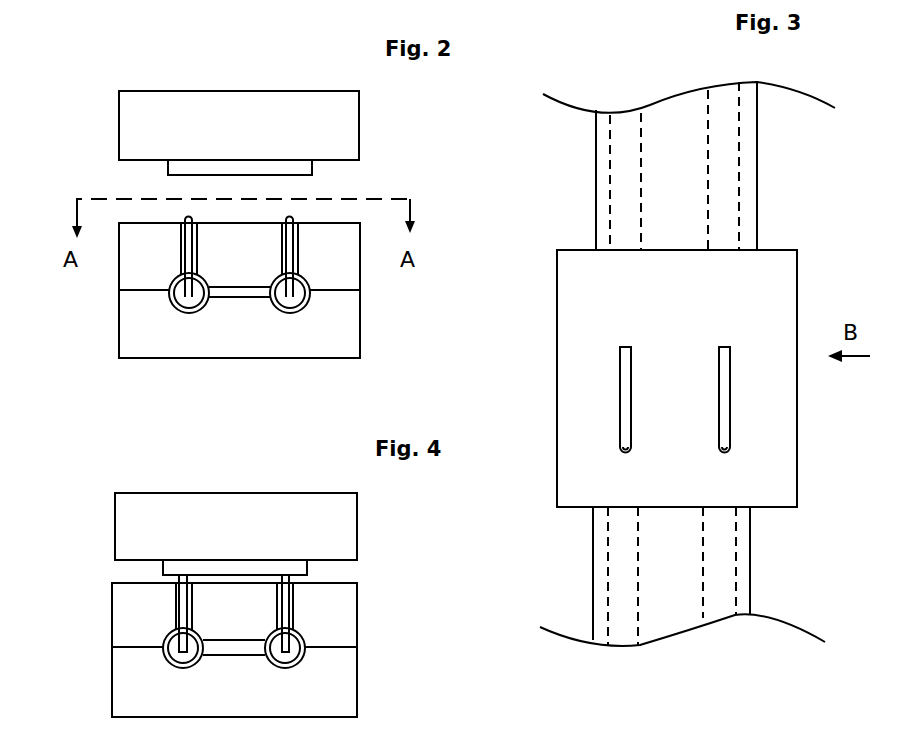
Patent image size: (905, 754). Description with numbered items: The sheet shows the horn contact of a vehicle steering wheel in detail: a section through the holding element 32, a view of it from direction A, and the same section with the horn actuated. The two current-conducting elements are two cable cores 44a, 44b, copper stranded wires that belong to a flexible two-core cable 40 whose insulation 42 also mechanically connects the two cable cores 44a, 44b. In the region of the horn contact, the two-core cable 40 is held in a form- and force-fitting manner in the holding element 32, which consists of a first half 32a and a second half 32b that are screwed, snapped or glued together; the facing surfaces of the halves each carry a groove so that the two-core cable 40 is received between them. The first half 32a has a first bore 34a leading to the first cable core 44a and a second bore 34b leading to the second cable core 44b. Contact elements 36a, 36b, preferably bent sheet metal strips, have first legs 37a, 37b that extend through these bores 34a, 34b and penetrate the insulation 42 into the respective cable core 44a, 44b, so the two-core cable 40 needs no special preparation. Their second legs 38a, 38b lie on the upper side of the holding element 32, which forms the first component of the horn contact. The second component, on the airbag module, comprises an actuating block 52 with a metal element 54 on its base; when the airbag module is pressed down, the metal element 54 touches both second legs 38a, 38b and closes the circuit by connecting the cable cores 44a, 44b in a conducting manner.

In FIG. 2, the holding element 32 is at (118, 273).
In FIG. 3, the holding element 32 is at (778, 458).
In FIG. 2, the first half 32a is at (343, 262).
In FIG. 2, the second half 32b is at (347, 316).
In FIG. 2, the first bore 34a is at (183, 245).
In FIG. 2, the second bore 34b is at (294, 250).
In FIG. 4, the contact element 36a is at (183, 608).
In FIG. 4, the contact element 36b is at (283, 605).
In FIG. 2, the first leg 37a is at (189, 265).
In FIG. 4, the first leg 37a is at (180, 600).
In FIG. 2, the first leg 37b is at (291, 258).
In FIG. 4, the first leg 37b is at (290, 628).
In FIG. 3, the second leg 38a is at (622, 430).
In FIG. 3, the second leg 38b is at (724, 417).
In FIG. 3, the two-core cable 40 is at (651, 607).
In FIG. 2, the insulation 42 is at (284, 298).
In FIG. 3, the insulation 42 is at (659, 199).
In FIG. 2, the first cable core 44a is at (192, 302).
In FIG. 3, the first cable core 44a is at (625, 583).
In FIG. 2, the second cable core 44b is at (298, 306).
In FIG. 3, the second cable core 44b is at (720, 548).
In FIG. 2, the actuating block 52 is at (342, 128).
In FIG. 4, the actuating block 52 is at (357, 525).
In FIG. 2, the metal element 54 is at (305, 170).